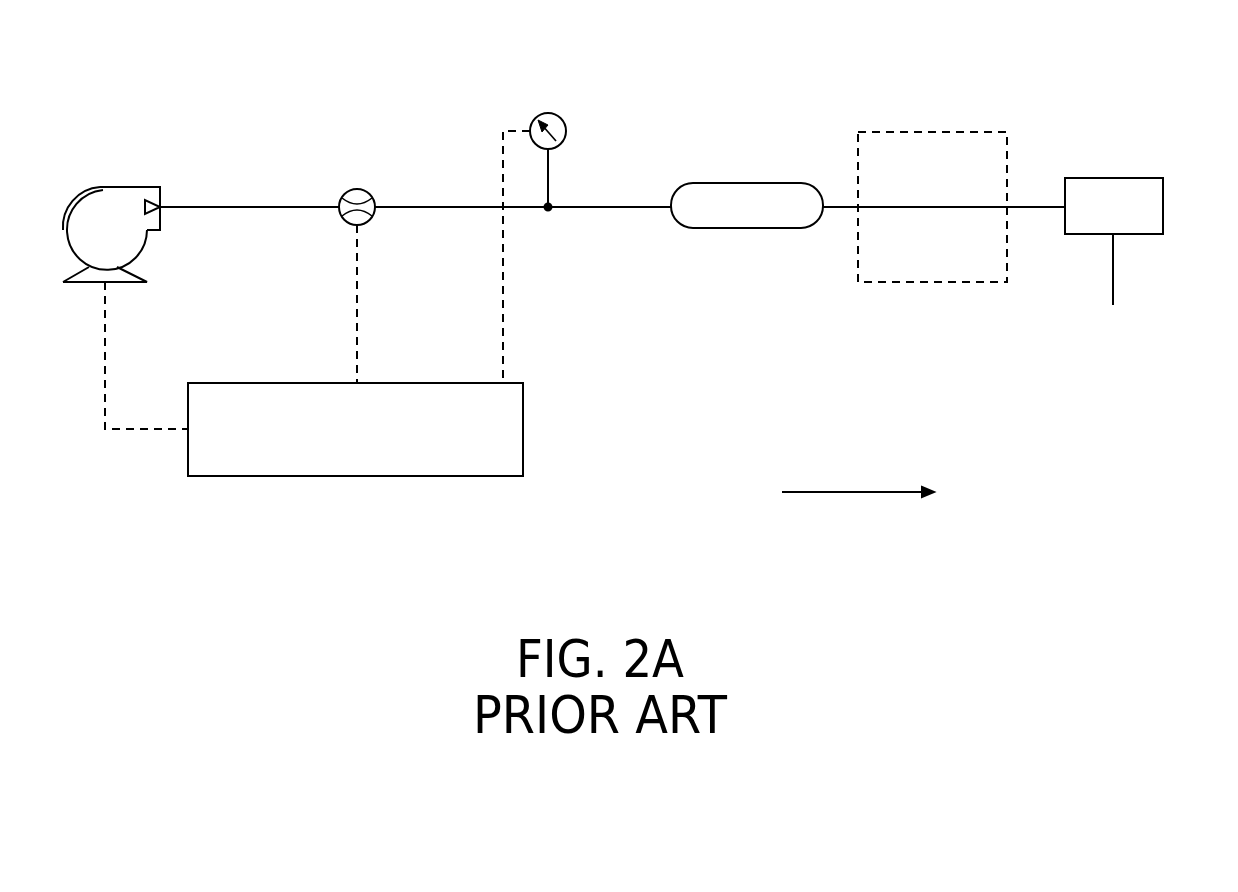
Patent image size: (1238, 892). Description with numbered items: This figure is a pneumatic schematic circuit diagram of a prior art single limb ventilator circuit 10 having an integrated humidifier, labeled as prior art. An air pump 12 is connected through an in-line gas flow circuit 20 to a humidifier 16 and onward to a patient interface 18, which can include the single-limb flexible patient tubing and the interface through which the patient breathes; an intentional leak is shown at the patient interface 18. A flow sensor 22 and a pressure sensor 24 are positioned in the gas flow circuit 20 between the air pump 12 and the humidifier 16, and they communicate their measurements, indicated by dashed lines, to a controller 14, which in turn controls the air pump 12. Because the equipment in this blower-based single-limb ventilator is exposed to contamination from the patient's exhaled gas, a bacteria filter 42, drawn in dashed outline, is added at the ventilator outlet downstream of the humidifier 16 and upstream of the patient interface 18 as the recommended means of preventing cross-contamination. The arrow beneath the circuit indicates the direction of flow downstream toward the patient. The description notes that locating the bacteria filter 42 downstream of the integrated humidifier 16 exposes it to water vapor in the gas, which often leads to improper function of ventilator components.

The single limb ventilator circuit 10 is at (822, 84).
The air pump 12 is at (117, 187).
The controller 14 is at (226, 383).
The humidifier 16 is at (746, 183).
The patient interface 18 is at (1106, 178).
The gas flow circuit 20 is at (607, 205).
The flow sensor 22 is at (370, 197).
The pressure sensor 24 is at (565, 122).
The bacteria filter 42 is at (975, 130).